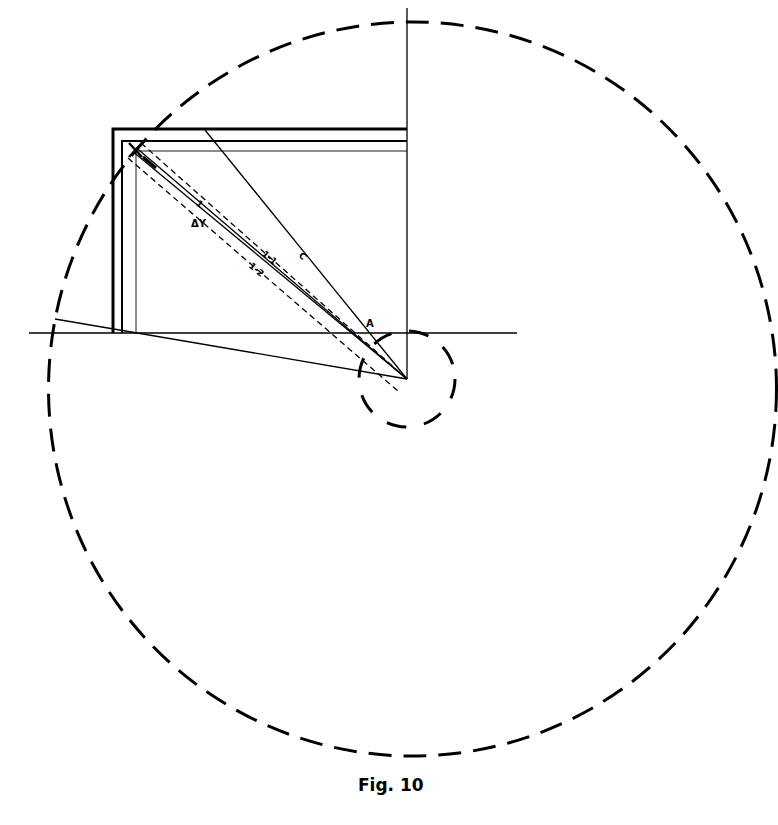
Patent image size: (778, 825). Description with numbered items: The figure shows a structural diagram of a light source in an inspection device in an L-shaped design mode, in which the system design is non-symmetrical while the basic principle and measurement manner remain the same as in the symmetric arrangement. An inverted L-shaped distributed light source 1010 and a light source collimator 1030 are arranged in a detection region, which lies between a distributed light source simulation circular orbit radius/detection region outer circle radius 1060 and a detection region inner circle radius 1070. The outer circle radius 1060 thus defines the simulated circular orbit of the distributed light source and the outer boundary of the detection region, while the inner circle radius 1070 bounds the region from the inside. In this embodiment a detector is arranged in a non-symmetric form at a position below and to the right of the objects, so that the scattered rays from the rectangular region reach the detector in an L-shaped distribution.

The inverted L-shaped distributed light source 1010 is at (316, 130).
The light source collimator 1030 is at (409, 192).
The distributed light source simulation circular orbit radius/detection region outer 1060 is at (216, 78).
The detection region inner circle radius 1070 is at (358, 371).